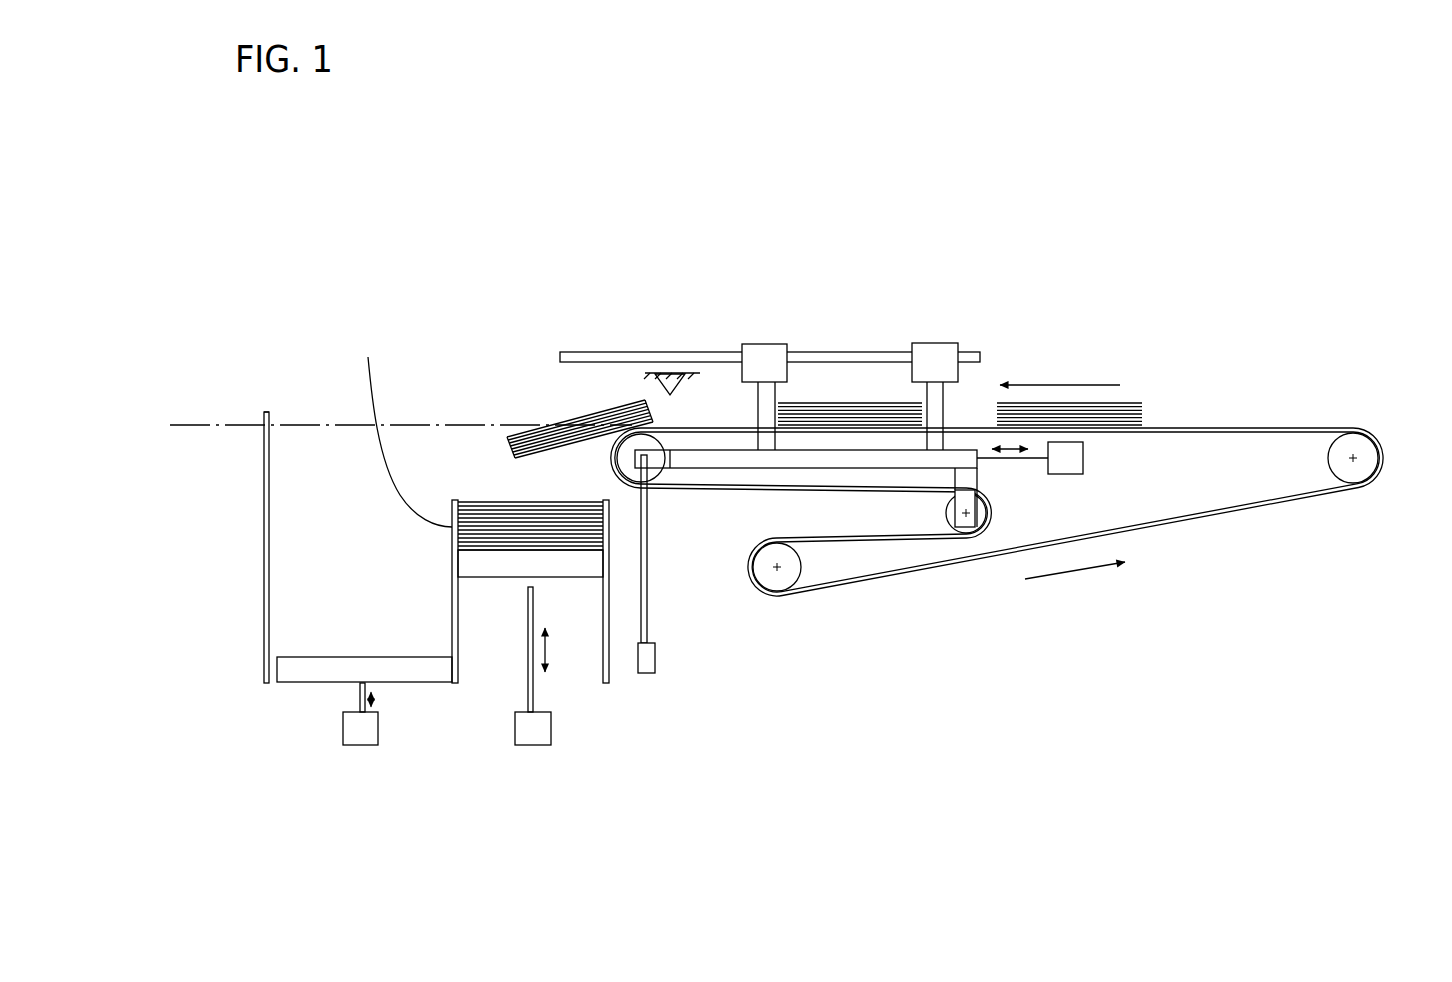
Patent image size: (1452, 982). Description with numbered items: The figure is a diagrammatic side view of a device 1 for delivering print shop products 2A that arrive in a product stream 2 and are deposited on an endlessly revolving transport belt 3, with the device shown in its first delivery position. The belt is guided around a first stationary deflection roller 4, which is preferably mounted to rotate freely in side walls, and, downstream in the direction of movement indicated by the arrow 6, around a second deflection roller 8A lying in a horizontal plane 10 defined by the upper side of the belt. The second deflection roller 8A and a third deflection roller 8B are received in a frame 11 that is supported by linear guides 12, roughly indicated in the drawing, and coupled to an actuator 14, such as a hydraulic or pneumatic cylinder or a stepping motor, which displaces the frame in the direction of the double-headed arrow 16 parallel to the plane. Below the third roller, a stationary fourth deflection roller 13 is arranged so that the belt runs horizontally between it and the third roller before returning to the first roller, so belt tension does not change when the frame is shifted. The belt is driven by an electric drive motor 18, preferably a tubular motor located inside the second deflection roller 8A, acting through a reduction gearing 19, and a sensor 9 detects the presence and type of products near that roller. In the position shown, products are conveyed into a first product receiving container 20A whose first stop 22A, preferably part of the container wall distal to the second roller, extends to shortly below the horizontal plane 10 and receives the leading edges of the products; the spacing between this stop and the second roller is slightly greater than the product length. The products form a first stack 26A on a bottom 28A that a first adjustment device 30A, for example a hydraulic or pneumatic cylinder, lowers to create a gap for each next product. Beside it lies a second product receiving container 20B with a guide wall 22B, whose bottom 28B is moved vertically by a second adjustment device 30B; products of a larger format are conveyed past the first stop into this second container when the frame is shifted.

The device 1 is at (600, 333).
The product stream 2 is at (1140, 386).
The print shop products 2A is at (555, 423).
The transport belt 3 is at (1253, 427).
The first stationary deflection roller 4 is at (1366, 452).
The arrow 6 is at (1008, 450).
The second deflection roller 8A is at (653, 472).
The third deflection roller 8B is at (963, 532).
The sensor 9 is at (676, 372).
The horizontal plane 10 is at (305, 424).
The frame 11 is at (835, 457).
The linear guides 12 is at (728, 335).
The fourth deflection roller 13 is at (788, 572).
The actuator 14 is at (1070, 453).
The double-headed arrow 16 is at (1028, 422).
The drive motor 18 is at (655, 660).
The reduction gearing 19 is at (655, 648).
The first product receiving container 20A is at (472, 456).
The second product receiving container 20B is at (347, 502).
The first stop 22A is at (391, 429).
The guide wall 22B is at (266, 445).
The first stack 26A is at (545, 528).
The bottom 28A is at (505, 566).
The bottom 28B is at (300, 672).
The first adjustment device 30A is at (530, 733).
The second adjustment device 30B is at (361, 733).